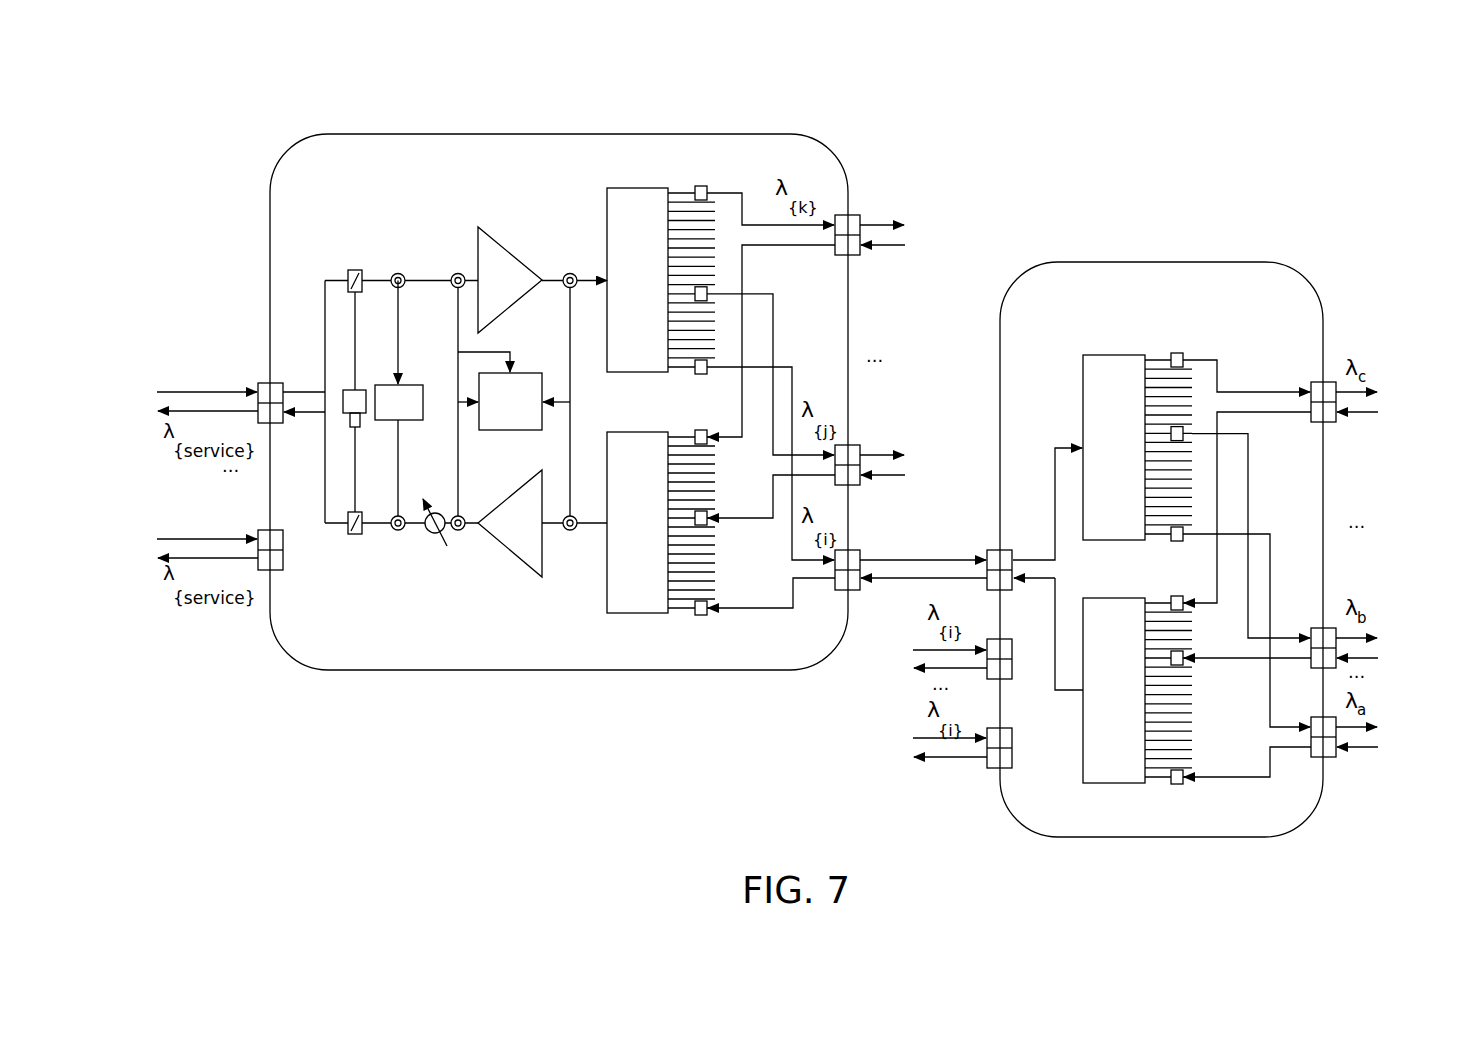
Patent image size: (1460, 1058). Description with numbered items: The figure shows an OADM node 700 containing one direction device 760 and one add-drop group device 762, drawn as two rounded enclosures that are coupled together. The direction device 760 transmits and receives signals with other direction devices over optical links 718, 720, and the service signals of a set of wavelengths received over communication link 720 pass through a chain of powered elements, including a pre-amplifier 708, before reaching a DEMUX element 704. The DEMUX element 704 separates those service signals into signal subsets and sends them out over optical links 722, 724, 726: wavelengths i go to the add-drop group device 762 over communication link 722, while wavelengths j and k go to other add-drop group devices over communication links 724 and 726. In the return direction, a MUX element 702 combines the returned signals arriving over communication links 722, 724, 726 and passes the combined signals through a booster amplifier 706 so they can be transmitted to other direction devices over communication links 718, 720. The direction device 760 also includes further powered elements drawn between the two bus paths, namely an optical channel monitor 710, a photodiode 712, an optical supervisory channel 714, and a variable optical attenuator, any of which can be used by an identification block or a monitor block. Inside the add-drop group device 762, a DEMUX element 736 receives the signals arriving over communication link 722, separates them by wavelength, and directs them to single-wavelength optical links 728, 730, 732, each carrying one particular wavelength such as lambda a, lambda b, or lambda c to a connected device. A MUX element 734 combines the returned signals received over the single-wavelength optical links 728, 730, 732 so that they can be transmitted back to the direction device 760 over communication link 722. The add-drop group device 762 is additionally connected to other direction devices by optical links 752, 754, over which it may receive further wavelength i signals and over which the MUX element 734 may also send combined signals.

The OADM node 700 is at (250, 76).
The MUX element 702 is at (607, 607).
The DEMUX element 704 is at (606, 253).
The booster amplifier 706 is at (512, 496).
The pre-amplifier 708 is at (510, 253).
The optical channel monitor 710 is at (527, 373).
The photodiode 712 is at (412, 385).
The optical supervisory channel 714 is at (352, 426).
The optical link 718 is at (156, 532).
The communication link 720 is at (156, 385).
The communication link 722 is at (860, 542).
The communication link 724 is at (907, 448).
The communication link 726 is at (907, 218).
The single-wavelength optical link 728 is at (1380, 720).
The single-wavelength optical link 730 is at (1380, 630).
The single-wavelength optical link 732 is at (1380, 385).
The MUX element 734 is at (1083, 720).
The DEMUX element 736 is at (1083, 398).
The optical link 752 is at (910, 642).
The optical link 754 is at (910, 731).
The direction device 760 is at (558, 134).
The add-drop group device 762 is at (1162, 262).